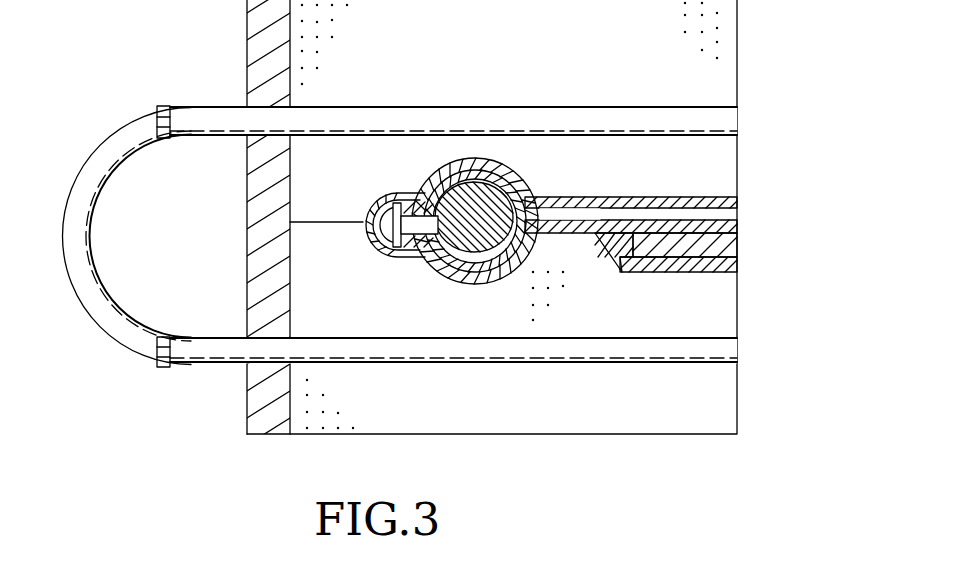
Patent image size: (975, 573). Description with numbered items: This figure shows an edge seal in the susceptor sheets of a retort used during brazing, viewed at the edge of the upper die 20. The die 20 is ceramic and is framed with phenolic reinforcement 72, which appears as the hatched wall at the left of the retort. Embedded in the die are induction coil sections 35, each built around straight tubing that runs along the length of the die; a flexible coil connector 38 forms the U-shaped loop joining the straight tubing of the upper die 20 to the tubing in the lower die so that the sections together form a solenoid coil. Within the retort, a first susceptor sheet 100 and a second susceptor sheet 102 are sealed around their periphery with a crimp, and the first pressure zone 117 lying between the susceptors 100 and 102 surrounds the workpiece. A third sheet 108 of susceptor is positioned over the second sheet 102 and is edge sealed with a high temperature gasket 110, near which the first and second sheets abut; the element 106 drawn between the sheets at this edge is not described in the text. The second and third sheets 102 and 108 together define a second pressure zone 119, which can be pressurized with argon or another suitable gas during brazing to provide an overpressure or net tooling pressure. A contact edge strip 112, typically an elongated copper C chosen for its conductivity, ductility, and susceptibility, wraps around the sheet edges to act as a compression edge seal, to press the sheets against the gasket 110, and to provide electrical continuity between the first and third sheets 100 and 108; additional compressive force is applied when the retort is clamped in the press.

The upper die 20 is at (694, 434).
The induction coil section 35 is at (737, 118).
The flexible coil connector 38 is at (98, 243).
The phenolic reinforcement 72 is at (247, 48).
The susceptor sheet 100 is at (737, 265).
The susceptor sheet 102 is at (737, 224).
The block 106 is at (737, 249).
The third sheet of susceptor 108 is at (737, 203).
The high temperature gasket 110 is at (421, 236).
The contact edge strip 112 is at (488, 157).
The first pressure zone 117 is at (627, 242).
The second pressure zone 119 is at (566, 215).